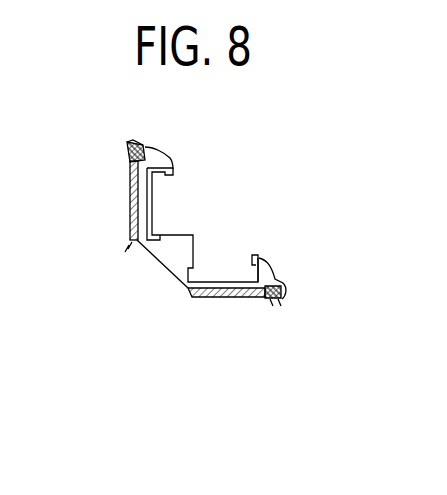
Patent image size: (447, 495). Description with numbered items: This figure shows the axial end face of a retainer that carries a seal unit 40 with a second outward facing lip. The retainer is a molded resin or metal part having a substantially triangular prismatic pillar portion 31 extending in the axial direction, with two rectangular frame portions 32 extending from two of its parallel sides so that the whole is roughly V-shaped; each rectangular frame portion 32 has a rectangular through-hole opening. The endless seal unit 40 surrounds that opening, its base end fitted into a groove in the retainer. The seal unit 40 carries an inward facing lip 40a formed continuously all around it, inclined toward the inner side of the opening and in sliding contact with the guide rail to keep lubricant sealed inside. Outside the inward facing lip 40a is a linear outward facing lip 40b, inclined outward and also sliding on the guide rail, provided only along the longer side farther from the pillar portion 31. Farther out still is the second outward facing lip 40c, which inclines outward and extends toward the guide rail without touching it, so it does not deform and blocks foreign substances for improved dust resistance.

The seal unit 40 is at (122, 247).
The inward facing lip 40a is at (128, 182).
The outward facing lip 40b is at (127, 151).
The second outward facing lip 40c is at (127, 142).
The pillar portion 31 is at (179, 234).
The rectangular frame portion 32 is at (153, 200).